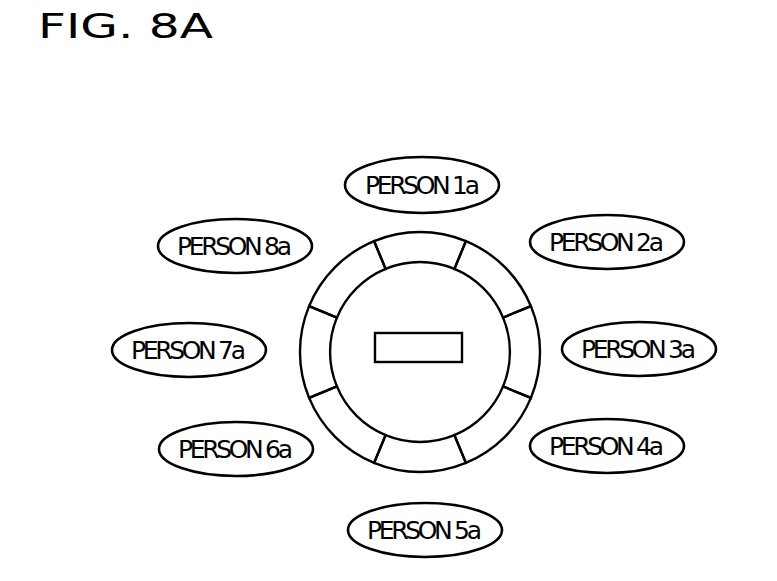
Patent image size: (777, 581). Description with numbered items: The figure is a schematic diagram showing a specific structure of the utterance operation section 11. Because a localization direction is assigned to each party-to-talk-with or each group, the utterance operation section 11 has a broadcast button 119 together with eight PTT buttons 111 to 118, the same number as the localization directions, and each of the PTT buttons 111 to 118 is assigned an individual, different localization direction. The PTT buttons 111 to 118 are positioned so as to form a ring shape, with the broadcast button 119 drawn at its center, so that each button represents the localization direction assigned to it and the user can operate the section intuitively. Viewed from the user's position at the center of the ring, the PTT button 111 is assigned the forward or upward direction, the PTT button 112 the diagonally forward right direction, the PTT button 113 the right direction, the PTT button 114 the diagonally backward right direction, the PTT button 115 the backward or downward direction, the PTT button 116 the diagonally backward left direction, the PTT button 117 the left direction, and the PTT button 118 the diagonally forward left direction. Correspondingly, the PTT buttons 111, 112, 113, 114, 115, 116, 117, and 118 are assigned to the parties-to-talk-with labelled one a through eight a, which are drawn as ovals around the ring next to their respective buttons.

The utterance operation section 11 is at (603, 130).
The PTT button 111 is at (447, 235).
The PTT button 112 is at (507, 272).
The PTT button 113 is at (535, 363).
The PTT button 114 is at (487, 453).
The PTT button 115 is at (388, 467).
The PTT button 116 is at (342, 448).
The PTT button 117 is at (303, 327).
The PTT button 118 is at (353, 245).
The broadcast button 119 is at (393, 333).